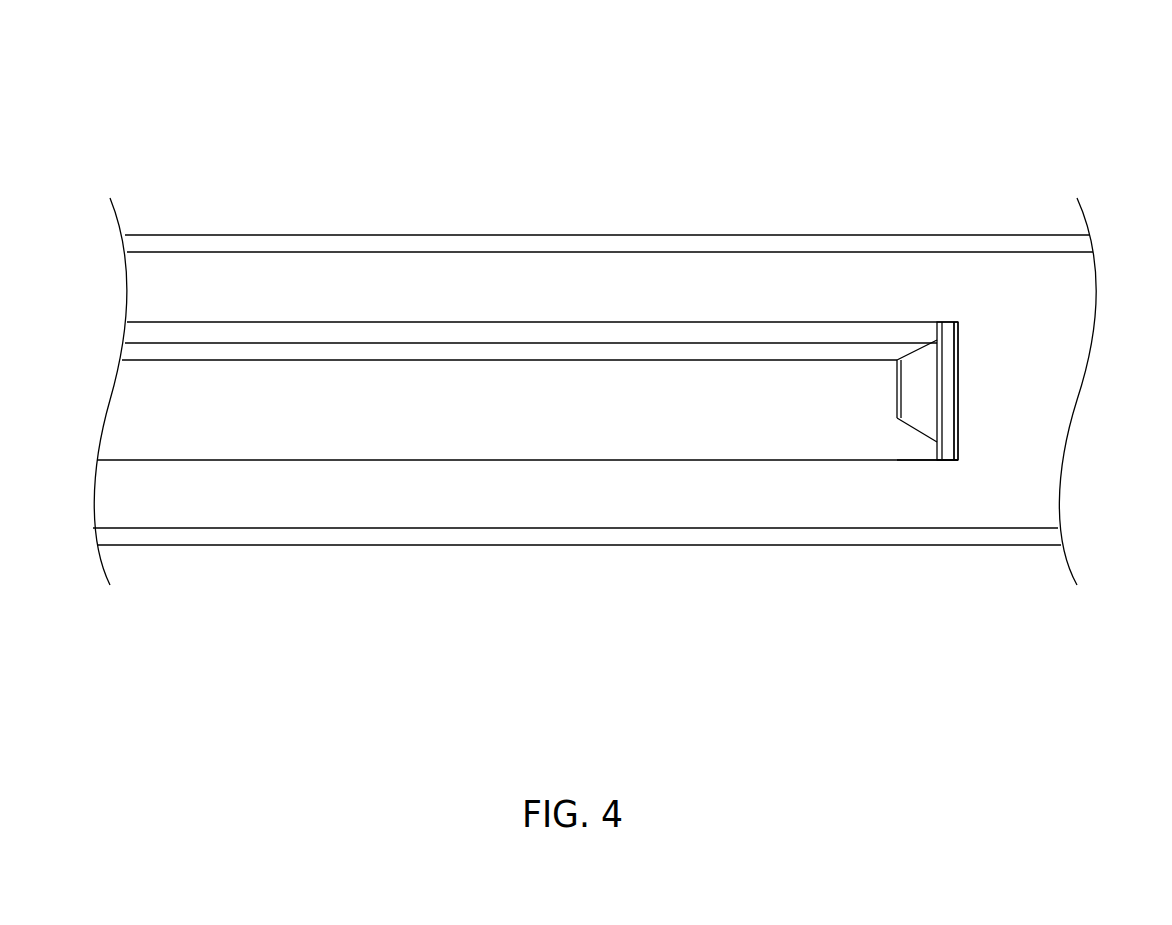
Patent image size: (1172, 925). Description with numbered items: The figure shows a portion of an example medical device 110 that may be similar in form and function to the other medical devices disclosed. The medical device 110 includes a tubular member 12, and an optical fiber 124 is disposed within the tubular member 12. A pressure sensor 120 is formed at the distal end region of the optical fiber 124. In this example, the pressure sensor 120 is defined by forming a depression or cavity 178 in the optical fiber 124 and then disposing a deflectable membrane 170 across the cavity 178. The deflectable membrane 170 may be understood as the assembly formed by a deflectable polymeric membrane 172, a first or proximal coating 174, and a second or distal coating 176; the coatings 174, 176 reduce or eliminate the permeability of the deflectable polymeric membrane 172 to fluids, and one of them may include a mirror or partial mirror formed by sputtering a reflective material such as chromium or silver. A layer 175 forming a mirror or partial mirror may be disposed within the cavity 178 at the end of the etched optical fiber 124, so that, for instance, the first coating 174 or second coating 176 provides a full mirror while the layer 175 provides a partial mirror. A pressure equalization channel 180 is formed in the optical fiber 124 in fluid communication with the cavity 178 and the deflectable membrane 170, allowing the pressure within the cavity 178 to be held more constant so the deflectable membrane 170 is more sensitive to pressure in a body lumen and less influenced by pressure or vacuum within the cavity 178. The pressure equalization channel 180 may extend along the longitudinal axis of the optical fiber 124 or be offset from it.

The medical device 110 is at (215, 98).
The tubular member 12 is at (605, 233).
The pressure equalization channel 180 is at (742, 353).
The optical fiber 124 is at (295, 428).
The deflectable membrane 170 is at (980, 350).
The second coating 176 is at (960, 423).
The deflectable polymeric membrane 172 is at (948, 455).
The layer 175 is at (895, 413).
The cavity 178 is at (919, 363).
The first coating 174 is at (937, 405).
The pressure sensor 120 is at (914, 480).